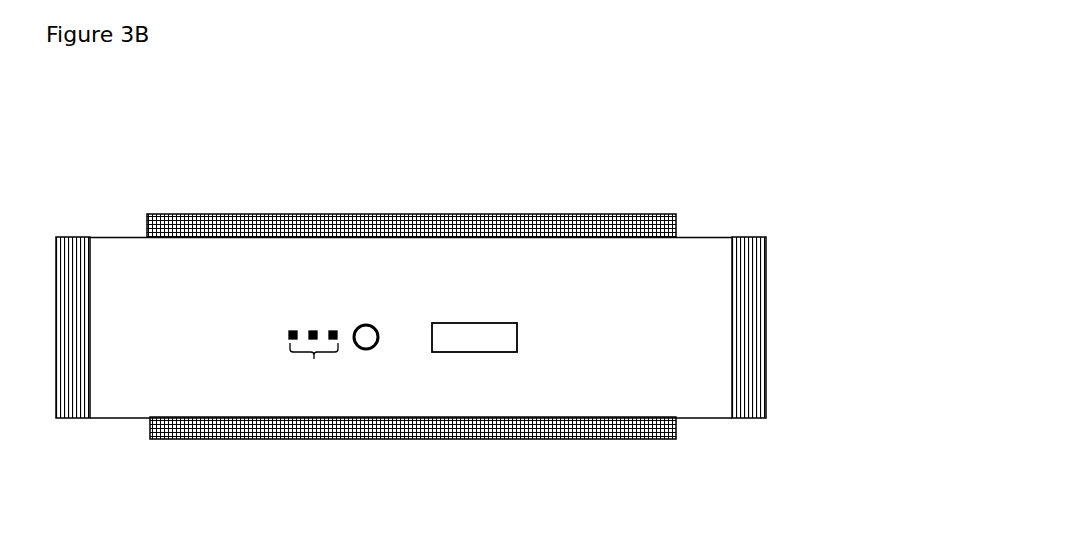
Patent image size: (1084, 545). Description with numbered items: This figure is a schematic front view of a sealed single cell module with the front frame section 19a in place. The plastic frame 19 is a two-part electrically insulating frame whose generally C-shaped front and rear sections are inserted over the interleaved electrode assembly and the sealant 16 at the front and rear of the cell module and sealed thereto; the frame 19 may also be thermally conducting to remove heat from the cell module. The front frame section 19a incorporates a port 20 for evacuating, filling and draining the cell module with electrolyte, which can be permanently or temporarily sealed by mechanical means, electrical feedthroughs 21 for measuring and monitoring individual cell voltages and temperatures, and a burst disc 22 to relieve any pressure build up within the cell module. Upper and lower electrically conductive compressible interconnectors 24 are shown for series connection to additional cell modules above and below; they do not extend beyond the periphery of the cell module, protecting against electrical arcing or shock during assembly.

The sealant 16 is at (66, 262).
The plastic frame 19 is at (689, 393).
The front frame section 19a is at (133, 382).
The port 20 is at (366, 352).
The electrical feedthroughs 21 is at (313, 360).
The burst disc 22 is at (466, 352).
The interconnectors 24 is at (612, 228).